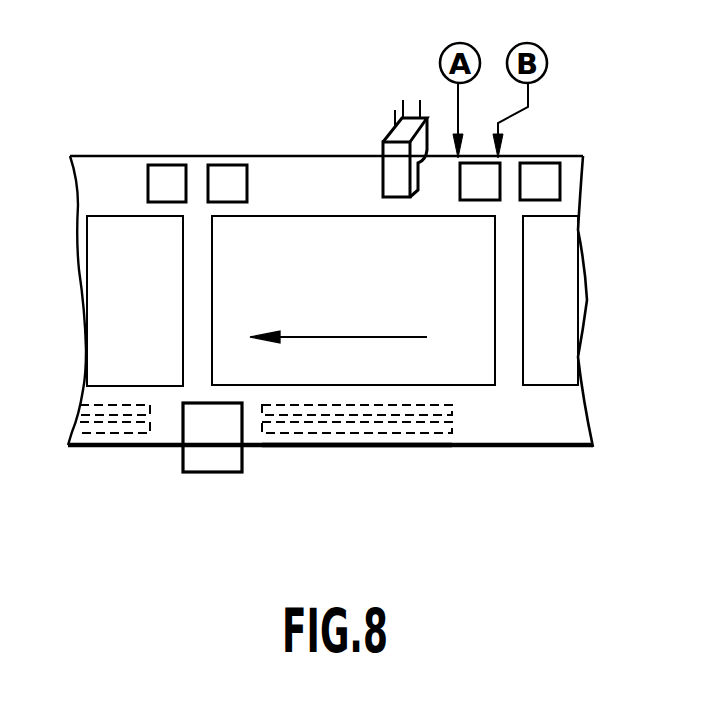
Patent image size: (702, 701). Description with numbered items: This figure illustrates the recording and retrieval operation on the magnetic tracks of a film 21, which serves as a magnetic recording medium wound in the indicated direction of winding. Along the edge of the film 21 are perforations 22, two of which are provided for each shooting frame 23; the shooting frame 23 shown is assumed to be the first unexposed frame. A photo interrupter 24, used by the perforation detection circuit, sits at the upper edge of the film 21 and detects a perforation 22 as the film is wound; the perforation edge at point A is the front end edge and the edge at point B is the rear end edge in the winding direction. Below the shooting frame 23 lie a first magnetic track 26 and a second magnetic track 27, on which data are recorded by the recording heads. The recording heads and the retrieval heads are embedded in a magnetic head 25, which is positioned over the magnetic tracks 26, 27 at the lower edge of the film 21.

The film 21 is at (107, 173).
The perforation 22 is at (167, 170).
The shooting frame 23 is at (336, 215).
The photo interrupter 24 is at (398, 105).
The magnetic head 25 is at (202, 474).
The first magnetic track 26 is at (452, 405).
The second magnetic track 27 is at (410, 433).